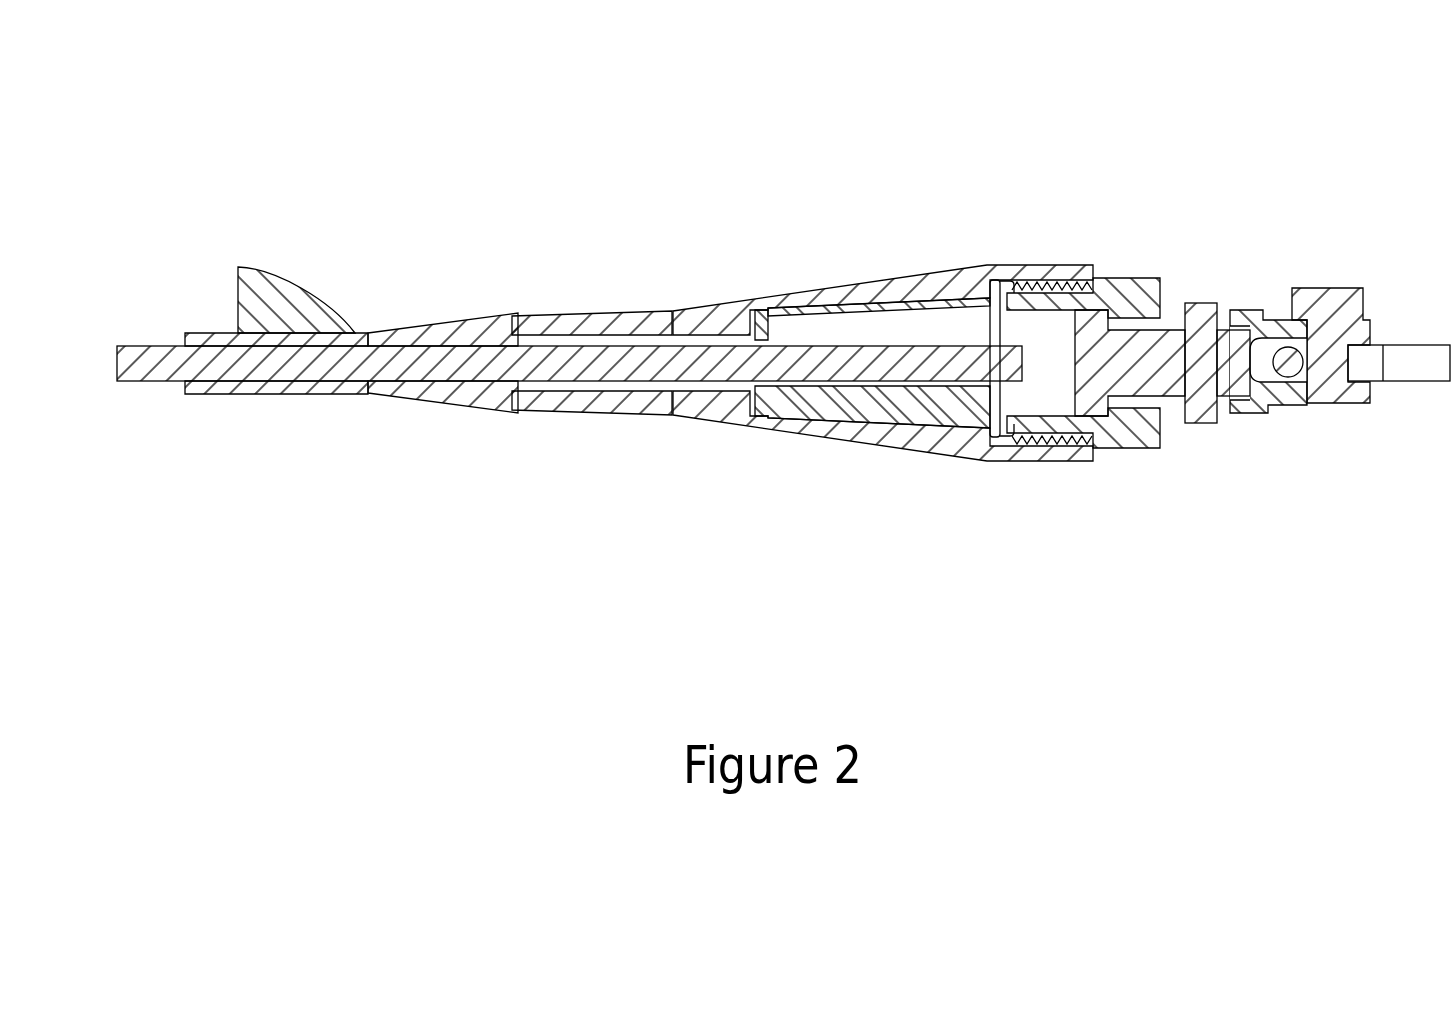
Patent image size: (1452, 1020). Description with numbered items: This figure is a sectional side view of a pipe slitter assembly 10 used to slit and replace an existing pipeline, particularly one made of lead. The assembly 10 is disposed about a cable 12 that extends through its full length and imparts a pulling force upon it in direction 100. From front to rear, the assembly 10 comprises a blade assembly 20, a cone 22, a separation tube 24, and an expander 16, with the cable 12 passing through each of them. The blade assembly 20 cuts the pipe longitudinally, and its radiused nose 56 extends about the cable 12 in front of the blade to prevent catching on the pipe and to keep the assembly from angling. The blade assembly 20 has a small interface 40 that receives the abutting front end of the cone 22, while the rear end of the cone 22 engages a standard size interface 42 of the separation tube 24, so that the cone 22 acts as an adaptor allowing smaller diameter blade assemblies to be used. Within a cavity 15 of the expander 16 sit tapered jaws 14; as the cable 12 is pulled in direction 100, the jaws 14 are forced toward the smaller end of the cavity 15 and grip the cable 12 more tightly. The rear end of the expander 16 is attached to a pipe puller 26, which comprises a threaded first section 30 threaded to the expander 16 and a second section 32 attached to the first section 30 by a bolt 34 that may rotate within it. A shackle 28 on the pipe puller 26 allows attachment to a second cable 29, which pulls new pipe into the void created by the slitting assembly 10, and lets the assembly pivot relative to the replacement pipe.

The pipe slitter assembly 10 is at (783, 299).
The direction 100 is at (1065, 108).
The cable 12 is at (807, 362).
The tapered jaws 14 is at (847, 405).
The cavity 15 is at (997, 282).
The expander 16 is at (910, 442).
The blade assembly 20 is at (257, 392).
The cone 22 is at (473, 322).
The separation tube 24 is at (590, 320).
The pipe puller 26 is at (1252, 312).
The shackle 28 is at (1330, 297).
The second cable 29 is at (1420, 373).
The threaded first section 30 is at (1103, 297).
The second section 32 is at (1253, 407).
The bolt 34 is at (1137, 380).
The small interface 40 is at (368, 327).
The standard size interface 42 is at (523, 420).
The nose 56 is at (187, 337).